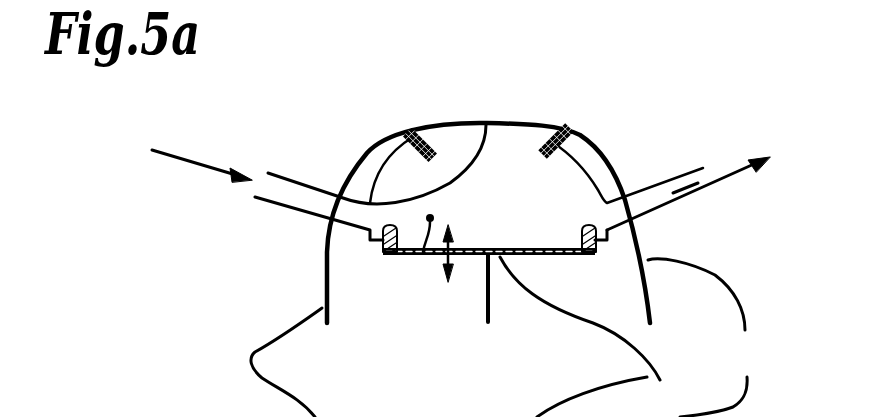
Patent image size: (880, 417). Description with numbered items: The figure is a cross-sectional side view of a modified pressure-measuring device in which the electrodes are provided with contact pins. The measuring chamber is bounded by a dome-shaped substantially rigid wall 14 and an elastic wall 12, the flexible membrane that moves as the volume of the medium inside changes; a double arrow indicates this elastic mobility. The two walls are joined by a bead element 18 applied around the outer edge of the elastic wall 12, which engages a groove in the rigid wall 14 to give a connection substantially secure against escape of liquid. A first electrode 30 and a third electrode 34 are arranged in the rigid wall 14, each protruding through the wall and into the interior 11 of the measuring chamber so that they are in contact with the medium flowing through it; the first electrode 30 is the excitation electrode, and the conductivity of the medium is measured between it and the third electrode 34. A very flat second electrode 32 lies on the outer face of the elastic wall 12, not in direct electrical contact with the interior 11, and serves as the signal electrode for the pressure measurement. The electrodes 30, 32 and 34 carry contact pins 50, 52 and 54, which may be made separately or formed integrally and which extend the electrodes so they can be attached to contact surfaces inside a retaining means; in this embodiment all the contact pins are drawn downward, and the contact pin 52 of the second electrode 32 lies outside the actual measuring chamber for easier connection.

The interior of the measuring chamber 11 is at (417, 257).
The elastic wall 12 is at (400, 257).
The substantially rigid wall 14 is at (325, 245).
The bead element 18 is at (382, 257).
The first electrode 30 is at (560, 126).
The second electrode 32 is at (591, 337).
The third electrode 34 is at (413, 128).
The contact pin 50 is at (714, 338).
The contact pin 52 is at (488, 312).
The contact pin 54 is at (266, 362).